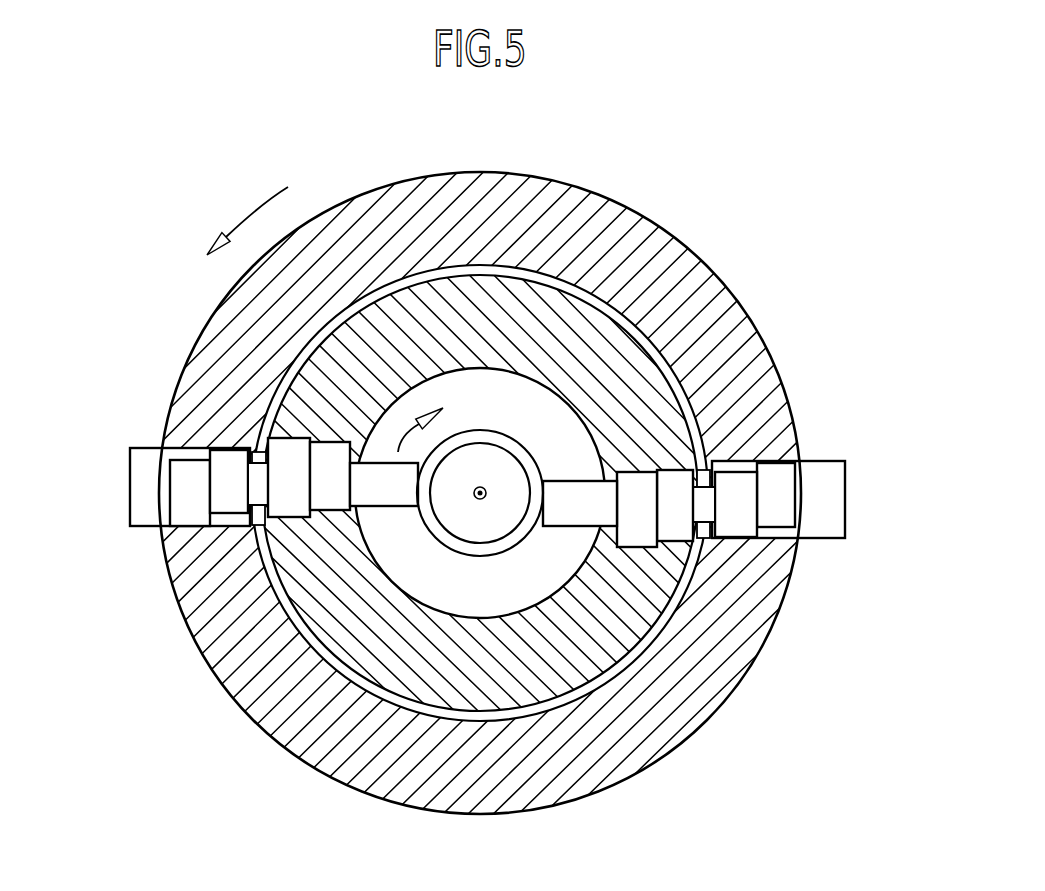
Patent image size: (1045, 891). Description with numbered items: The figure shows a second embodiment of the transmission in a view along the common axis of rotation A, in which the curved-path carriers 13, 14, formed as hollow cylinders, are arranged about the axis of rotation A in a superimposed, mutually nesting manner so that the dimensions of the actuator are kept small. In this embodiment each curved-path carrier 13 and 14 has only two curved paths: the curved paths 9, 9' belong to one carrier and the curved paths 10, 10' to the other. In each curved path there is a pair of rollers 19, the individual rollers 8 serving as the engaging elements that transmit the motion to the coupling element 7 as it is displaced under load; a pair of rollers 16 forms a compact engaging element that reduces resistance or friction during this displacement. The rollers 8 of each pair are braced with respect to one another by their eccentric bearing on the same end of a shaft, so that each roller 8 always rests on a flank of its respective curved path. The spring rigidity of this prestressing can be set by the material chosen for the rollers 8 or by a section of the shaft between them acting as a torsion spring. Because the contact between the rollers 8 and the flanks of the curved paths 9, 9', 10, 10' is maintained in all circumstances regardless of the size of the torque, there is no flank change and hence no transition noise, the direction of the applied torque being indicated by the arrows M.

The coupling element 7 is at (527, 530).
The rollers 8 is at (287, 463).
The curved path 9 is at (190, 570).
The curved path 9' is at (772, 424).
The curved path 10 is at (261, 601).
The curved path 10' is at (701, 393).
The curved-path carrier 13 is at (463, 780).
The curved-path carrier 14 is at (413, 667).
The pair of rollers 16 is at (118, 587).
The pair of rollers 19 is at (222, 493).
The axis of rotation A is at (481, 497).
The torque direction M is at (336, 309).